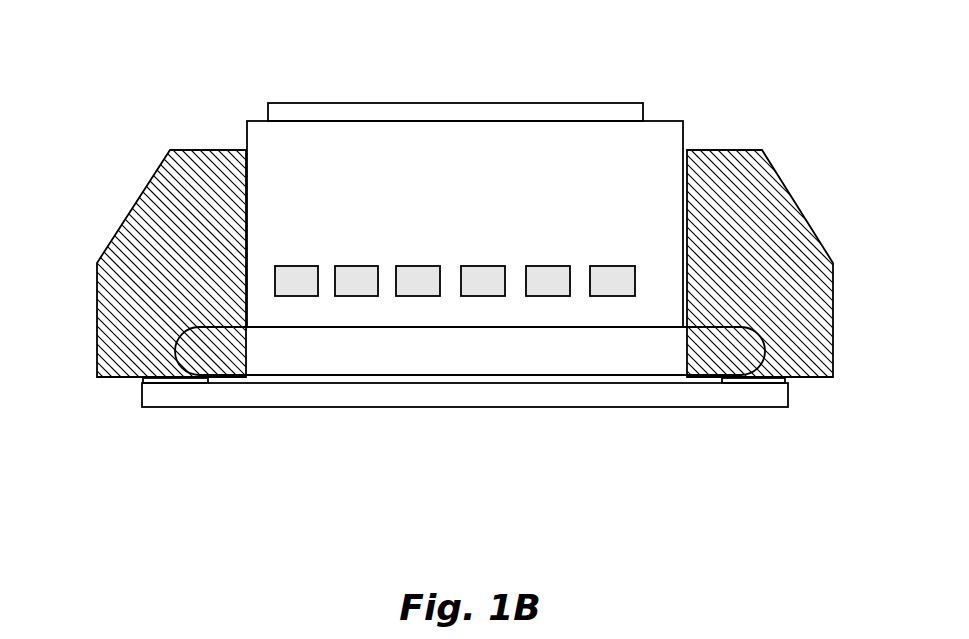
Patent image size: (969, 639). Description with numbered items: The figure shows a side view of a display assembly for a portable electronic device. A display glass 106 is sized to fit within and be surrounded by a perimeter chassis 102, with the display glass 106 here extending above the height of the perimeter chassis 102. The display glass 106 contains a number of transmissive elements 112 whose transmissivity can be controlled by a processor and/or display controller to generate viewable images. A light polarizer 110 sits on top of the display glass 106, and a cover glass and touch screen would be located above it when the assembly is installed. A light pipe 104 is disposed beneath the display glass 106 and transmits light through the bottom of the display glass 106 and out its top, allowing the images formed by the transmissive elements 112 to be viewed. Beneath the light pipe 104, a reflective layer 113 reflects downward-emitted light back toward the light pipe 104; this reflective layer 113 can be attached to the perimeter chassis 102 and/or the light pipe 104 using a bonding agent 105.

The perimeter chassis 102 is at (723, 178).
The light pipe 104 is at (627, 355).
The bonding agent 105 is at (790, 435).
The display glass 106 is at (330, 210).
The light polarizer 110 is at (507, 110).
The transmissive elements 112 is at (307, 283).
The reflective layer 113 is at (513, 392).